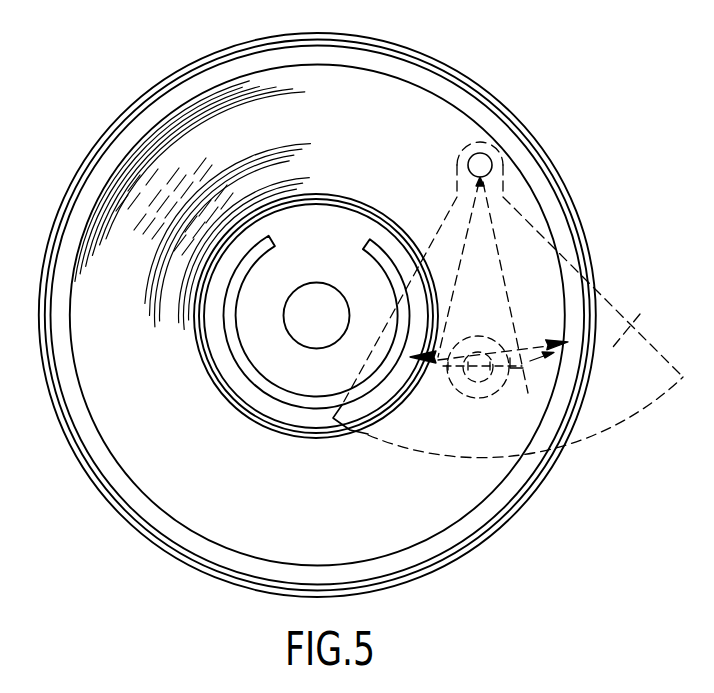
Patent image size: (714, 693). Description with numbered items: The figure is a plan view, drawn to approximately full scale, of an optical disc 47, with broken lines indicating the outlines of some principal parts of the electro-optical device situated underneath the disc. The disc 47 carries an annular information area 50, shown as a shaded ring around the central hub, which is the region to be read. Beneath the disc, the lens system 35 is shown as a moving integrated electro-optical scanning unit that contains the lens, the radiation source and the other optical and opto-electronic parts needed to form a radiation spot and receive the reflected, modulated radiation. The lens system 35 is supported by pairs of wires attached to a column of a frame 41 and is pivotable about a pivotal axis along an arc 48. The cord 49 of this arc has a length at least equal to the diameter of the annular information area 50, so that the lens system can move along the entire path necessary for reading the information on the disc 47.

The lens system 35 is at (470, 383).
The frame 41 is at (508, 300).
The optical disc 47 is at (563, 186).
The arc 48 is at (526, 386).
The cord 49 is at (538, 347).
The annular information area 50 is at (131, 207).